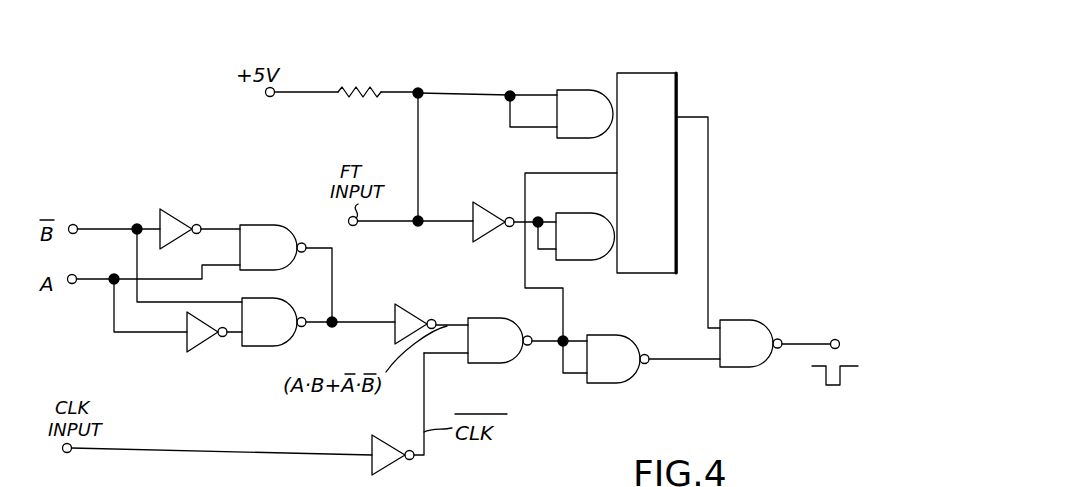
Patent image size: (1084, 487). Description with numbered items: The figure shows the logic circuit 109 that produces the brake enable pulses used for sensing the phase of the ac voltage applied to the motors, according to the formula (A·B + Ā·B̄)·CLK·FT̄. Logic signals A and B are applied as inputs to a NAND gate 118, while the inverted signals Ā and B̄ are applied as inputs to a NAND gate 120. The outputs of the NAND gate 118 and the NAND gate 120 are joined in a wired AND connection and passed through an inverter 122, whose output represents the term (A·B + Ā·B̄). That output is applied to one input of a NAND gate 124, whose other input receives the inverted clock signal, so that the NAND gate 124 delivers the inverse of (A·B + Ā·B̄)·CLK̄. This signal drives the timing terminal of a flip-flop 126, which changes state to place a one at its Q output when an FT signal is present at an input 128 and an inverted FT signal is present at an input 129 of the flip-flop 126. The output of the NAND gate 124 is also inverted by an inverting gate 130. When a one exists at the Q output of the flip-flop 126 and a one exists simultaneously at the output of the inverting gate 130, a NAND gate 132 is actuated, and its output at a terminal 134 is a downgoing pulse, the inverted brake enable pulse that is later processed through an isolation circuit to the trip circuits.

The logic circuit 109 is at (752, 103).
The NAND gate 118 is at (300, 208).
The NAND gate 120 is at (270, 332).
The inverter 122 is at (420, 302).
The NAND gate 124 is at (505, 300).
The flip-flop 126 is at (645, 73).
The input 128 is at (509, 217).
The input 129 is at (452, 92).
The inverting gate 130 is at (613, 334).
The NAND gate 132 is at (755, 320).
The terminal 134 is at (840, 343).